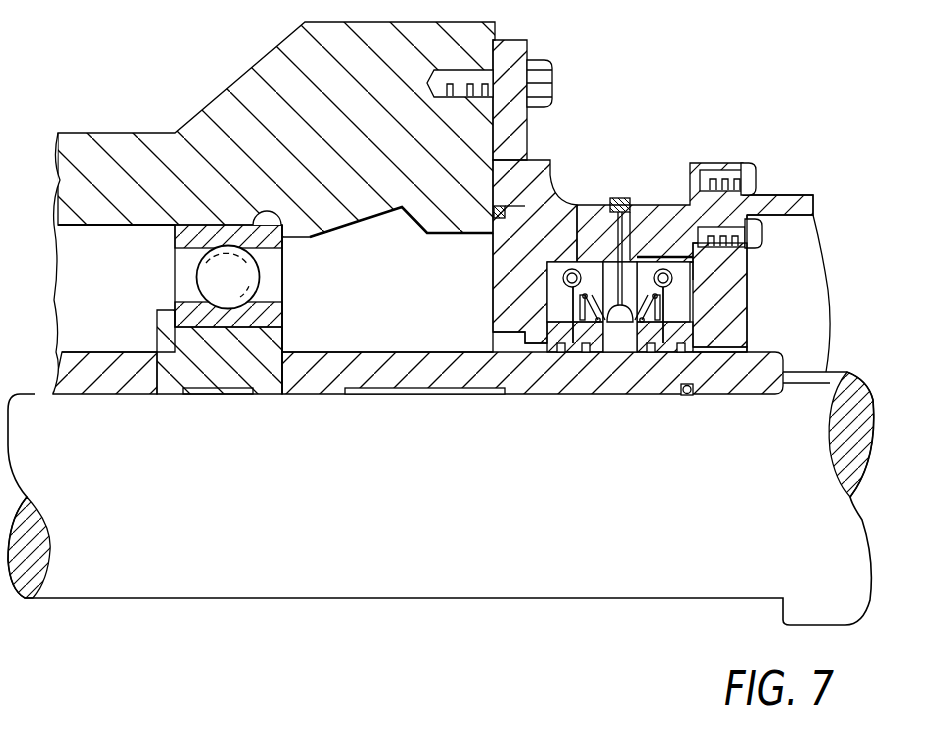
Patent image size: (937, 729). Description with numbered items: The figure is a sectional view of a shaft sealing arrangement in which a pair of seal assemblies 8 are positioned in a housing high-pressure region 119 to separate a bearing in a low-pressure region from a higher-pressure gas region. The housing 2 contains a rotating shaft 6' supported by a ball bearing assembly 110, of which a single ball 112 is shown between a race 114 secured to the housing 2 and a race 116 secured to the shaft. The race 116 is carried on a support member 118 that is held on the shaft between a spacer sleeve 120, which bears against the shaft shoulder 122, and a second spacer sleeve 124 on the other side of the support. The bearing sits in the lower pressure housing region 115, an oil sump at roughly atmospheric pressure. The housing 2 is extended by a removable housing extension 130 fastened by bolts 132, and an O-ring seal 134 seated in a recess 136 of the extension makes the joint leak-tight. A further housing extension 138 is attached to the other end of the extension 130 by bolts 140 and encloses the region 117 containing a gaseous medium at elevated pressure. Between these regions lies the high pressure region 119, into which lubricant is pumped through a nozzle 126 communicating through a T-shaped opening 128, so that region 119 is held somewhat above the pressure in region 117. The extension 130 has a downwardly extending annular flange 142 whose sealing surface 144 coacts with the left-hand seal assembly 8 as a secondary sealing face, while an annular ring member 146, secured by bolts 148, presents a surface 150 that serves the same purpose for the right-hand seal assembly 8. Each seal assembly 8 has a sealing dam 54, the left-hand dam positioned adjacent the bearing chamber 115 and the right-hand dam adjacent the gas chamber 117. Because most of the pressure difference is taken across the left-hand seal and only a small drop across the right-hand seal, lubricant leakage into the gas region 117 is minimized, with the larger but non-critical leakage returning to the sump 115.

The housing 2 is at (242, 66).
The rotating shaft 6' is at (441, 498).
The seal assembly 8 is at (543, 358).
The sealing dam 54 is at (545, 360).
The ball bearing assembly 110 is at (125, 296).
The ball 112 is at (205, 274).
The race 114 is at (283, 269).
The housing region 115 is at (452, 308).
The race 116 is at (283, 297).
The housing region 117 is at (800, 297).
The support member 118 is at (283, 344).
The high pressure region 119 is at (652, 252).
The spacer sleeve 120 is at (741, 375).
The shaft shoulder 122 is at (828, 370).
The spacer sleeve 124 is at (92, 375).
The nozzle 126 is at (612, 200).
The T-shaped opening 128 is at (626, 230).
The housing extension 130 is at (513, 126).
The bolt 132 is at (553, 72).
The O-ring seal 134 is at (492, 213).
The recess 136 is at (506, 217).
The housing extension 138 is at (800, 203).
The bolt 140 is at (757, 178).
The flange 142 is at (492, 268).
The sealing surface 144 is at (542, 328).
The annular ring member 146 is at (725, 310).
The bolt 148 is at (763, 236).
The surface 150 is at (696, 274).